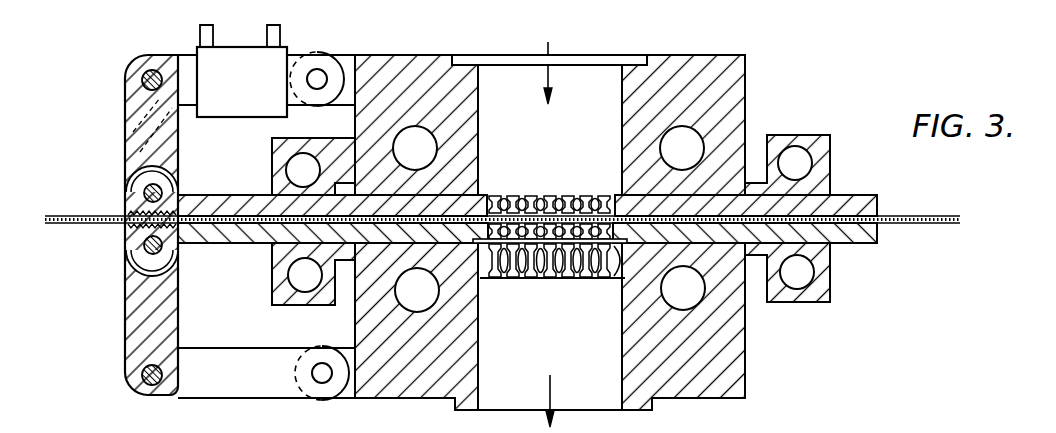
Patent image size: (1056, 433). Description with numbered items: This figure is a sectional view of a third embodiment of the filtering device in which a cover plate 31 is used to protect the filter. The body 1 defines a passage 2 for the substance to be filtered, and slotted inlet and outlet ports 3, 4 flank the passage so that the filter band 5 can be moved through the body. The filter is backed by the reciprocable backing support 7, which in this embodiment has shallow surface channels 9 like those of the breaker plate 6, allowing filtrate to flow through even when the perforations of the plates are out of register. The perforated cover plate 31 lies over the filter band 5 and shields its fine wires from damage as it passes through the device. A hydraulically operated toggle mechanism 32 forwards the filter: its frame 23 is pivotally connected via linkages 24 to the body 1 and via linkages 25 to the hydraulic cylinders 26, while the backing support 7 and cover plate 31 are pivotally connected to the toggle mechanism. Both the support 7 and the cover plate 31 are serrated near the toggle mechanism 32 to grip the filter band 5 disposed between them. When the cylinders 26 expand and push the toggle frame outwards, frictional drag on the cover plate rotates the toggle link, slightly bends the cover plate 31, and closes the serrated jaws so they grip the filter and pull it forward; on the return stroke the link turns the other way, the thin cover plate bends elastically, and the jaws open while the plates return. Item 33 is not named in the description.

The body 1 is at (664, 37).
The passage 2 is at (502, 74).
The inlet port 3 is at (807, 298).
The outlet port 4 is at (273, 153).
The filter band 5 is at (927, 215).
The breaker plate 6 is at (566, 281).
The backing support 7 is at (227, 238).
The surface channels 9 is at (611, 282).
The frame 23 is at (134, 328).
The linkages 24 is at (218, 393).
The linkages 25 is at (175, 60).
The hydraulic cylinders 26 is at (241, 89).
The cover plate 31 is at (215, 199).
The toggle mechanism 32 is at (112, 118).
The seal 33 is at (127, 240).